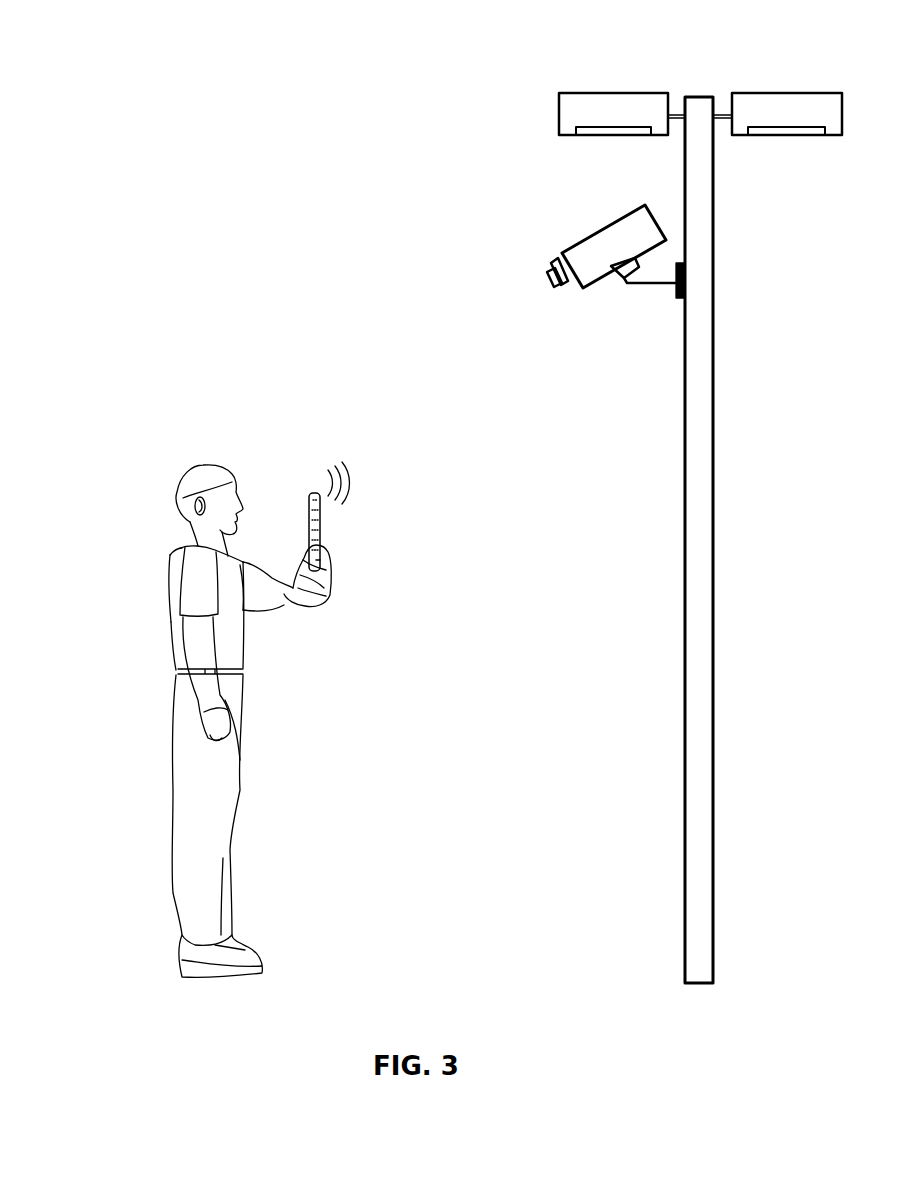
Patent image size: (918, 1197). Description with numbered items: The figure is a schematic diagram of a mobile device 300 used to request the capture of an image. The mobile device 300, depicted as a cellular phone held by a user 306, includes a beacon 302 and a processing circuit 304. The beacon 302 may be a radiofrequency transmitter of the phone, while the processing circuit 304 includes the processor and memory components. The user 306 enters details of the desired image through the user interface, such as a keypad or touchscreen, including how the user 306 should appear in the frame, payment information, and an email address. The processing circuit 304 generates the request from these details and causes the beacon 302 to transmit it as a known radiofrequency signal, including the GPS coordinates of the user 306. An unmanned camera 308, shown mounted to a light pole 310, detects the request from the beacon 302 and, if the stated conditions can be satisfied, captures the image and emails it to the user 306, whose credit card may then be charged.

The mobile device 300 is at (310, 523).
The beacon 302 is at (313, 483).
The processing circuit 304 is at (338, 552).
The user 306 is at (167, 600).
The unmanned camera 308 is at (600, 232).
The light pole 310 is at (700, 97).